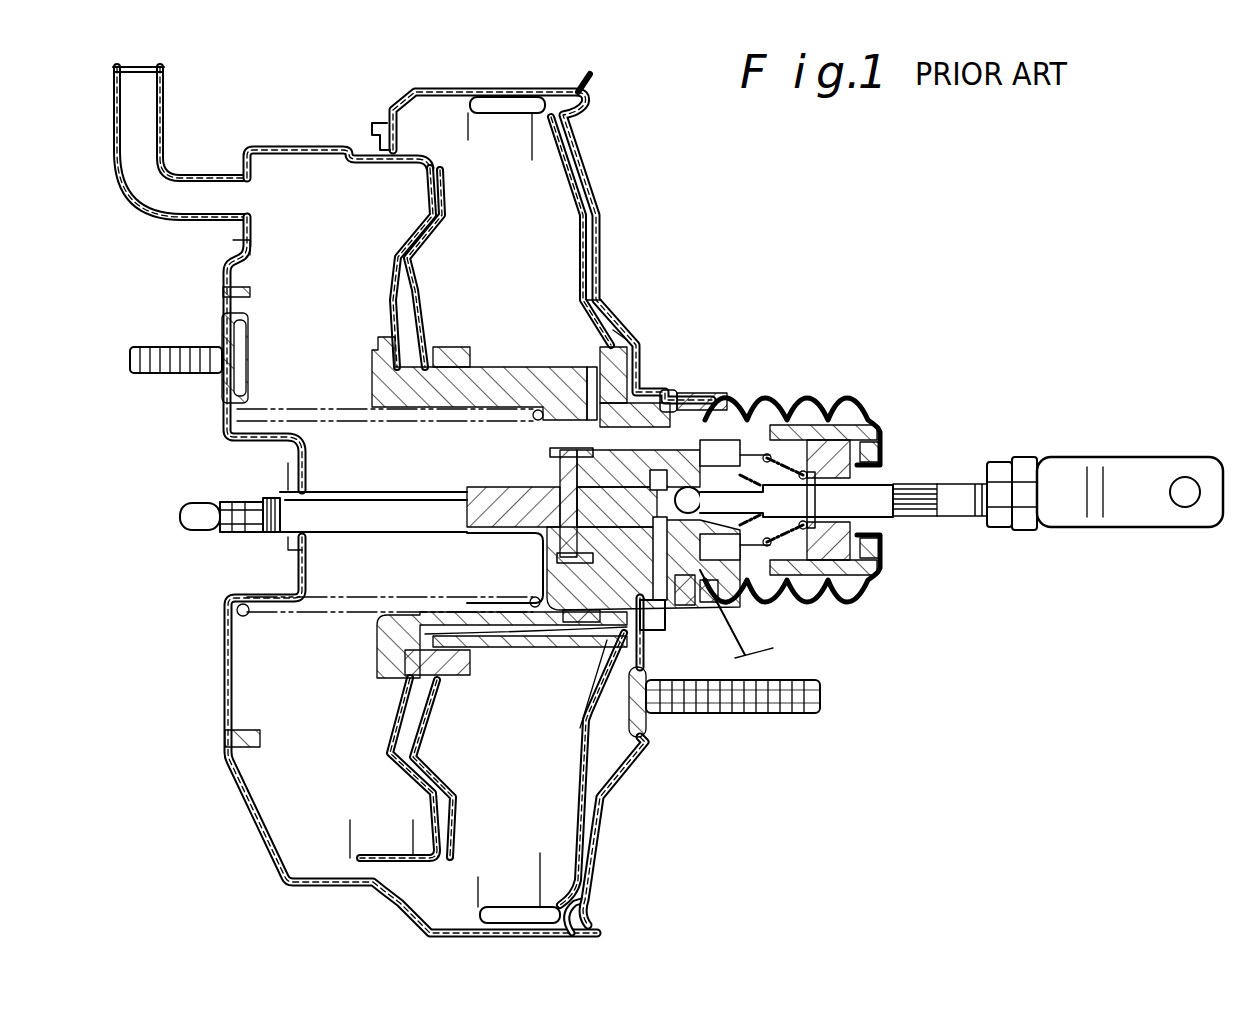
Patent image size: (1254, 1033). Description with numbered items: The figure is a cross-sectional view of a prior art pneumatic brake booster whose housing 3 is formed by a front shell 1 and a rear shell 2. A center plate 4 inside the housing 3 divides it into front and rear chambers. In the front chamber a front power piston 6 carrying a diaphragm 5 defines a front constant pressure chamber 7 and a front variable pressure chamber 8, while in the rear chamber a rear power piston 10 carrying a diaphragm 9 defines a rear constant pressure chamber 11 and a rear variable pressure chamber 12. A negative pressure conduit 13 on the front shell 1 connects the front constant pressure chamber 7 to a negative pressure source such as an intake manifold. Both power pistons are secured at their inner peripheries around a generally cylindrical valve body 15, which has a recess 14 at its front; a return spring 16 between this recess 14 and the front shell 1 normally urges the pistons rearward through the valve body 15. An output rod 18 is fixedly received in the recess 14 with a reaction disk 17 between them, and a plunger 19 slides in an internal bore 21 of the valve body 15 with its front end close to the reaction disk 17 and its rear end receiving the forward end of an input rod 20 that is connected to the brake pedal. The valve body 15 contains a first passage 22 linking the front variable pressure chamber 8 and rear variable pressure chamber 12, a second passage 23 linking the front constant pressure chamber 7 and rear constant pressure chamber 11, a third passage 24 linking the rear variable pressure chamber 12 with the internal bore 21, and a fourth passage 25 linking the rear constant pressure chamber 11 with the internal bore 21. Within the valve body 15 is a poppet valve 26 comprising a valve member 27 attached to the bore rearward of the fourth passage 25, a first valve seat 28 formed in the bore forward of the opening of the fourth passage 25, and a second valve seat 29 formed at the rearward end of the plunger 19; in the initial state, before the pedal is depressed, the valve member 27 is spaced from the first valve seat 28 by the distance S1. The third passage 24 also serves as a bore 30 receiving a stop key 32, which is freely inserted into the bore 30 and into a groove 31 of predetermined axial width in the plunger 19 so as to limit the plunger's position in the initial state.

The front shell 1 is at (262, 148).
The rear shell 2 is at (595, 165).
The housing 3 is at (629, 203).
The center plate 4 is at (447, 190).
The diaphragm 5 is at (367, 150).
The front power piston 6 is at (392, 243).
The front constant pressure chamber 7 is at (236, 252).
The front variable pressure chamber 8 is at (388, 287).
The diaphragm 9 is at (540, 92).
The rear power piston 10 is at (576, 220).
The rear constant pressure chamber 11 is at (601, 295).
The rear variable pressure chamber 12 is at (619, 332).
The negative pressure conduit 13 is at (118, 152).
The recess 14 is at (538, 422).
The valve body 15 is at (376, 392).
The return spring 16 is at (250, 617).
The reaction disk 17 is at (541, 548).
The output rod 18 is at (208, 505).
The plunger 19 is at (548, 486).
The input rod 20 is at (1068, 520).
The internal bore 21 is at (705, 445).
The first passage 22 is at (530, 630).
The second passage 23 is at (640, 368).
The third passage 24 is at (660, 620).
The fourth passage 25 is at (660, 390).
The poppet valve 26 is at (795, 603).
The valve member 27 is at (782, 415).
The first valve seat 28 is at (732, 432).
The second valve seat 29 is at (712, 603).
The bore 30 is at (733, 696).
The groove 31 is at (685, 606).
The stop key 32 is at (587, 616).
The distance S1 is at (744, 627).